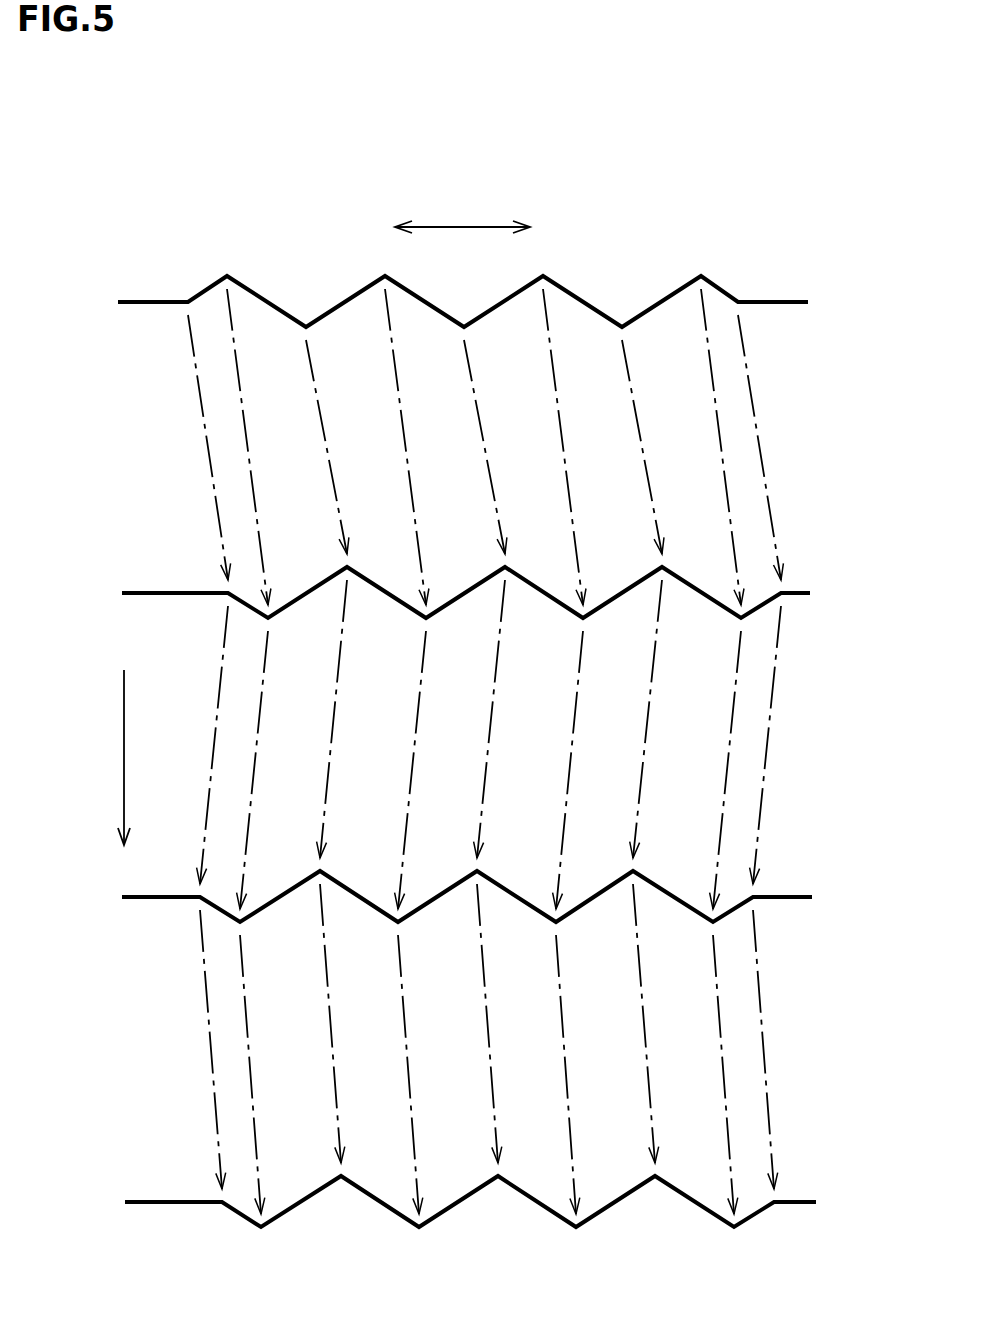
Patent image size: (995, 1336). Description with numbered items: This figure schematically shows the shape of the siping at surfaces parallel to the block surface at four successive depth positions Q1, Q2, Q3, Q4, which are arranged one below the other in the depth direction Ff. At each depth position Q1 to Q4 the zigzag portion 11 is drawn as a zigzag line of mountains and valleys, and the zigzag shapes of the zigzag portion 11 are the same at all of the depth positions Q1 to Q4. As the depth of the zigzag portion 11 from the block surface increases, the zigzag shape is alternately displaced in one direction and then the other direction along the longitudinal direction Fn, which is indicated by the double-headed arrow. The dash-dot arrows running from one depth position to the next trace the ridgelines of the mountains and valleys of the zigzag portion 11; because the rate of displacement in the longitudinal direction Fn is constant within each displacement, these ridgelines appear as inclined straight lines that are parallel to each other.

The zigzag portion 11 is at (588, 304).
The depth position Q1 is at (487, 301).
The depth position Q2 is at (491, 592).
The depth position Q3 is at (492, 896).
The depth position Q4 is at (495, 1201).
The longitudinal direction Fn is at (462, 226).
The depth direction Ff is at (123, 755).